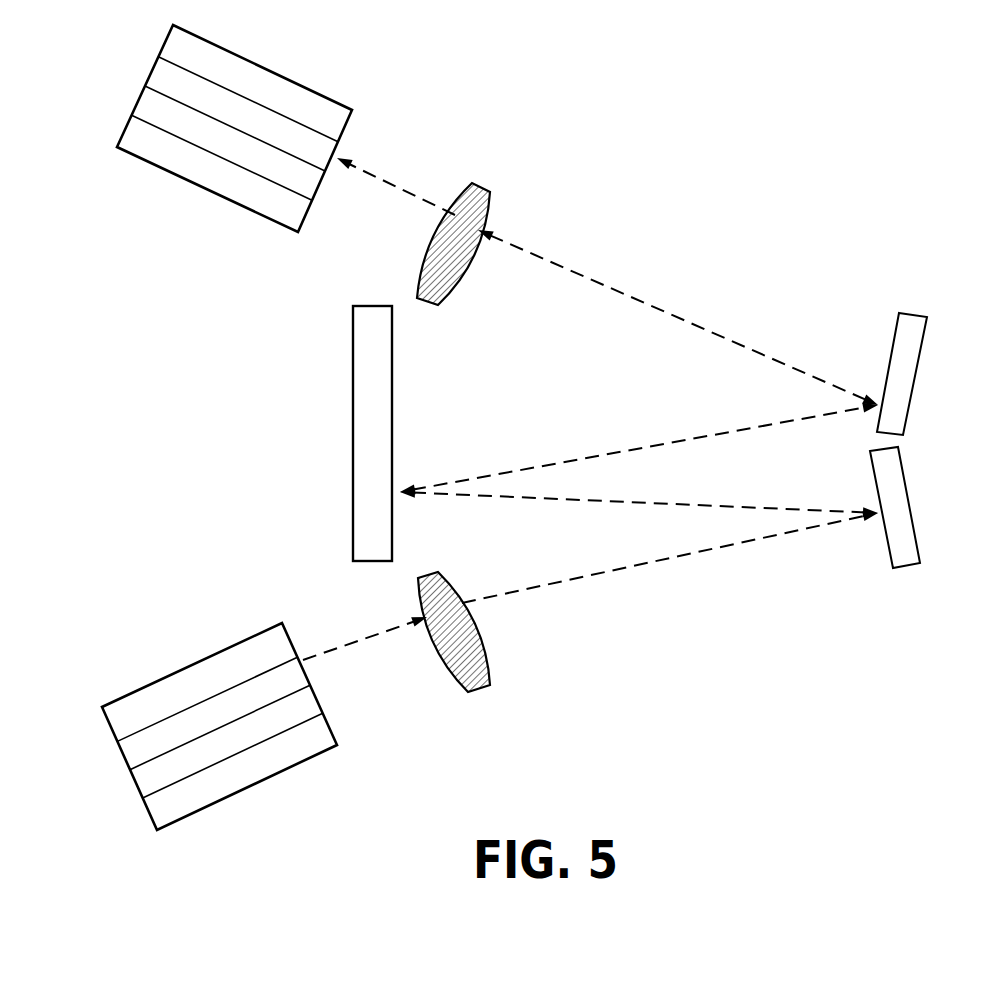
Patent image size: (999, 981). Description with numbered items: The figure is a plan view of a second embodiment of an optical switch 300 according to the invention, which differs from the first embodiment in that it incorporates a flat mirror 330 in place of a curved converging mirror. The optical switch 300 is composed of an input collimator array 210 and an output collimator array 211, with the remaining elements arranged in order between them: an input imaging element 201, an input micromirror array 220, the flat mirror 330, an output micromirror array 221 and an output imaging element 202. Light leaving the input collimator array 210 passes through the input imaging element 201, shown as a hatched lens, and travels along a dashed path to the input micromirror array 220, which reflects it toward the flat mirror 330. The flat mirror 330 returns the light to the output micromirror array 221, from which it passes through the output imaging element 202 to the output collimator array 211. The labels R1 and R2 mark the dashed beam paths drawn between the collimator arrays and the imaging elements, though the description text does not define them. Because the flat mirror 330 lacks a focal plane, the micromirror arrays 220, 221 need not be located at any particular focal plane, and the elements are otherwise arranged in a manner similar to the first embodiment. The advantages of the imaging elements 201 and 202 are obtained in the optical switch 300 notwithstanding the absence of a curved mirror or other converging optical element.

The optical switch 300 is at (888, 185).
The output collimator array 211 is at (148, 200).
The input collimator array 210 is at (284, 792).
The flat mirror 330 is at (340, 368).
The output imaging element 202 is at (480, 172).
The input imaging element 201 is at (480, 690).
The output micromirror array 221 is at (906, 325).
The input micromirror array 220 is at (898, 562).
The first light path R1 is at (421, 180).
The second light path R2 is at (360, 703).